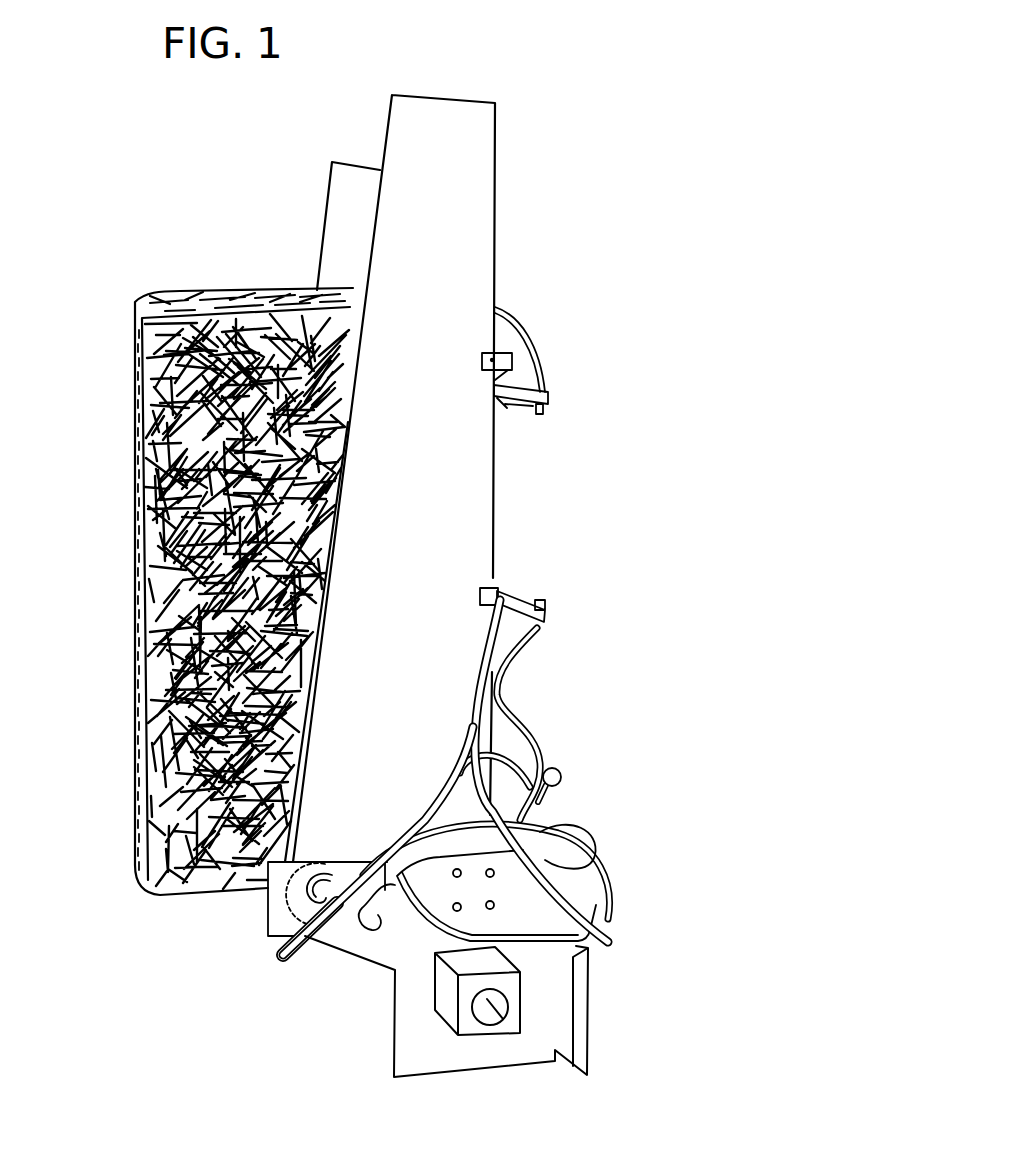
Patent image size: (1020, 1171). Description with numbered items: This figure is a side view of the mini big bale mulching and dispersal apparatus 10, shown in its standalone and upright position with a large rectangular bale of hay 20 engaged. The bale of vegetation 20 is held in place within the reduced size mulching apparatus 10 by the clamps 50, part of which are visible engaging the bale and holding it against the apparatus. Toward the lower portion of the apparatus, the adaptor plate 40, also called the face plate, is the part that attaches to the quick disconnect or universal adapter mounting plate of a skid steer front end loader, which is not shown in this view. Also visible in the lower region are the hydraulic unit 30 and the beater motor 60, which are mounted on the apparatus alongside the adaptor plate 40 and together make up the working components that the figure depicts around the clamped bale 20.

The mini big bale mulching and dispersal apparatus 10 is at (707, 258).
The rectangular bale of hay 20 is at (130, 417).
The hydraulic unit 30 is at (545, 727).
The adaptor plate 40 is at (605, 997).
The clamps 50 is at (546, 371).
The beater motor 60 is at (483, 1042).